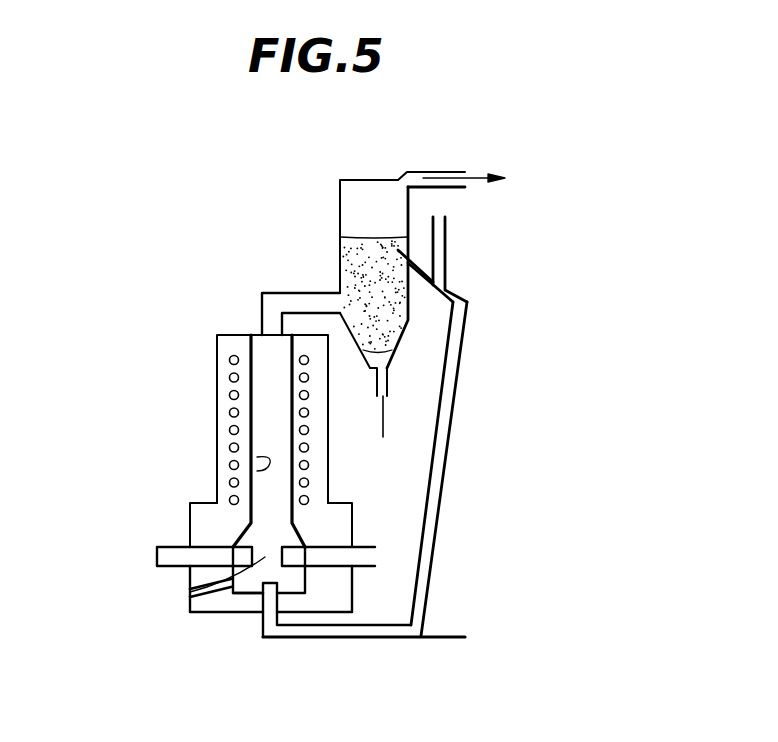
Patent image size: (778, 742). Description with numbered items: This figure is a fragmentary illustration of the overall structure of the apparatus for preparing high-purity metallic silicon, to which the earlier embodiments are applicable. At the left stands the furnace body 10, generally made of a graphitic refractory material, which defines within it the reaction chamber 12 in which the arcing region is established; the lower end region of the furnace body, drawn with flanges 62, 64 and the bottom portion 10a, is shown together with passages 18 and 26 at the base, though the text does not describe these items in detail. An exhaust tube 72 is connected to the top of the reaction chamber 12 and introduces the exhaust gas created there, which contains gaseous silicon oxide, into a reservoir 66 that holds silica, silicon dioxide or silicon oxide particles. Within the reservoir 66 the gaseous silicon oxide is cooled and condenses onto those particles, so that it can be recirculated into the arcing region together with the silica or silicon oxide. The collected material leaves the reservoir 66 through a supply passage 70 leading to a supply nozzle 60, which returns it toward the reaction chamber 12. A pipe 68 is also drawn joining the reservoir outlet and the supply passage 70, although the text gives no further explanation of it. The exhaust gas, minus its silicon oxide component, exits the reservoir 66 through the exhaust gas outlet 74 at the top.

The furnace body 10 is at (215, 418).
The bottom portion of reaction tube 10a is at (237, 615).
The reaction chamber 12 is at (252, 473).
The gas supply passage 18 is at (188, 583).
The gas passage 26 is at (190, 594).
The supply nozzle 60 is at (313, 639).
The flange 62 is at (173, 545).
The flange 64 is at (365, 545).
The reservoir 66 is at (340, 243).
The gas pipe 68 is at (448, 243).
The supply passage 70 is at (453, 403).
The exhaust tube 72 is at (260, 313).
The exhaust gas outlet 74 is at (425, 172).